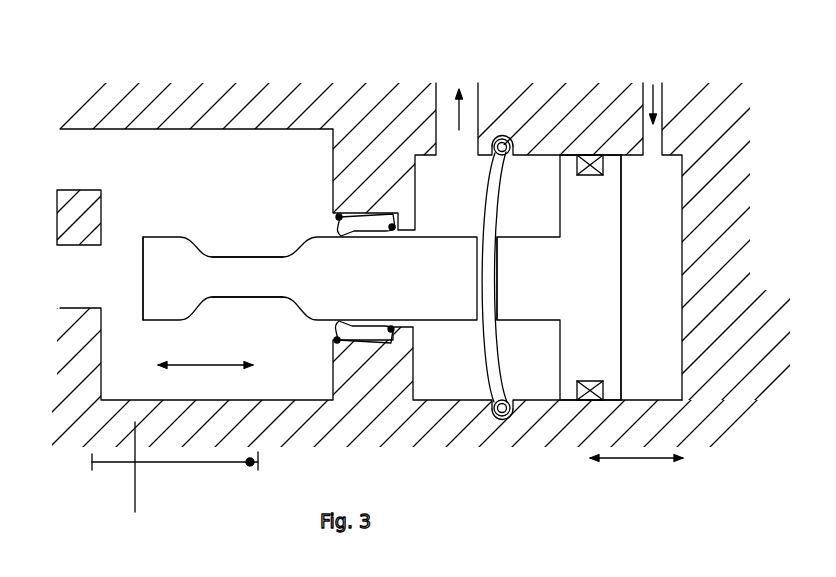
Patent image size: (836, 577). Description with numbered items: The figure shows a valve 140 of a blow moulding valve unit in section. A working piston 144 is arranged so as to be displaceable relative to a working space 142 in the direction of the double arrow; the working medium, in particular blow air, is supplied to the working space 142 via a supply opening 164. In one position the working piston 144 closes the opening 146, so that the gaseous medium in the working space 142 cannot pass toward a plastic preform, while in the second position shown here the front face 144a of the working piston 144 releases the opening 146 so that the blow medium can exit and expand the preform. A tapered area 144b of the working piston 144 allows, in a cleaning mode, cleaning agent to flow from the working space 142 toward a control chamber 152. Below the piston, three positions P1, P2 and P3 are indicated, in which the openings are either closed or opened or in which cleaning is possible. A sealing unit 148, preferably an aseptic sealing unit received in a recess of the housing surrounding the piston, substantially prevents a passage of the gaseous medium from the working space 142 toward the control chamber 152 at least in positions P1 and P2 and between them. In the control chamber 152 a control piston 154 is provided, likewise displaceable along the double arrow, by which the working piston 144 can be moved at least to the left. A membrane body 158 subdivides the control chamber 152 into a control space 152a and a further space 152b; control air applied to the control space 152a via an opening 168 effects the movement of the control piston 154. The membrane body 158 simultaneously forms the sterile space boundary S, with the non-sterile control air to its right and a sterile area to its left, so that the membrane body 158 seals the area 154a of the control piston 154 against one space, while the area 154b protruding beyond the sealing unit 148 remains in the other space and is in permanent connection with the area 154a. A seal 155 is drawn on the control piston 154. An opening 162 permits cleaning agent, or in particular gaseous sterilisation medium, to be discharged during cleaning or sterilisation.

The valve 140 is at (530, 443).
The working space 142 is at (202, 170).
The working piston 144 is at (332, 278).
The front face 144a is at (100, 377).
The tapered area 144b is at (257, 257).
The opening 146 is at (58, 280).
The sealing unit 148 is at (377, 222).
The control chamber 152 is at (427, 172).
The control space 152a is at (591, 350).
The further space 152b is at (451, 377).
The control piston 154 is at (570, 220).
The area of the control piston 154a is at (597, 297).
The area of the control piston 154b is at (472, 268).
The piston seal 155 is at (591, 157).
The membrane body 158 is at (490, 195).
The sterile space boundary S is at (488, 207).
The opening 162 is at (448, 147).
The opening 168 is at (648, 140).
The supply opening 164 is at (73, 168).
The position P1 is at (170, 483).
The position P2 is at (140, 480).
The position P3 is at (253, 480).